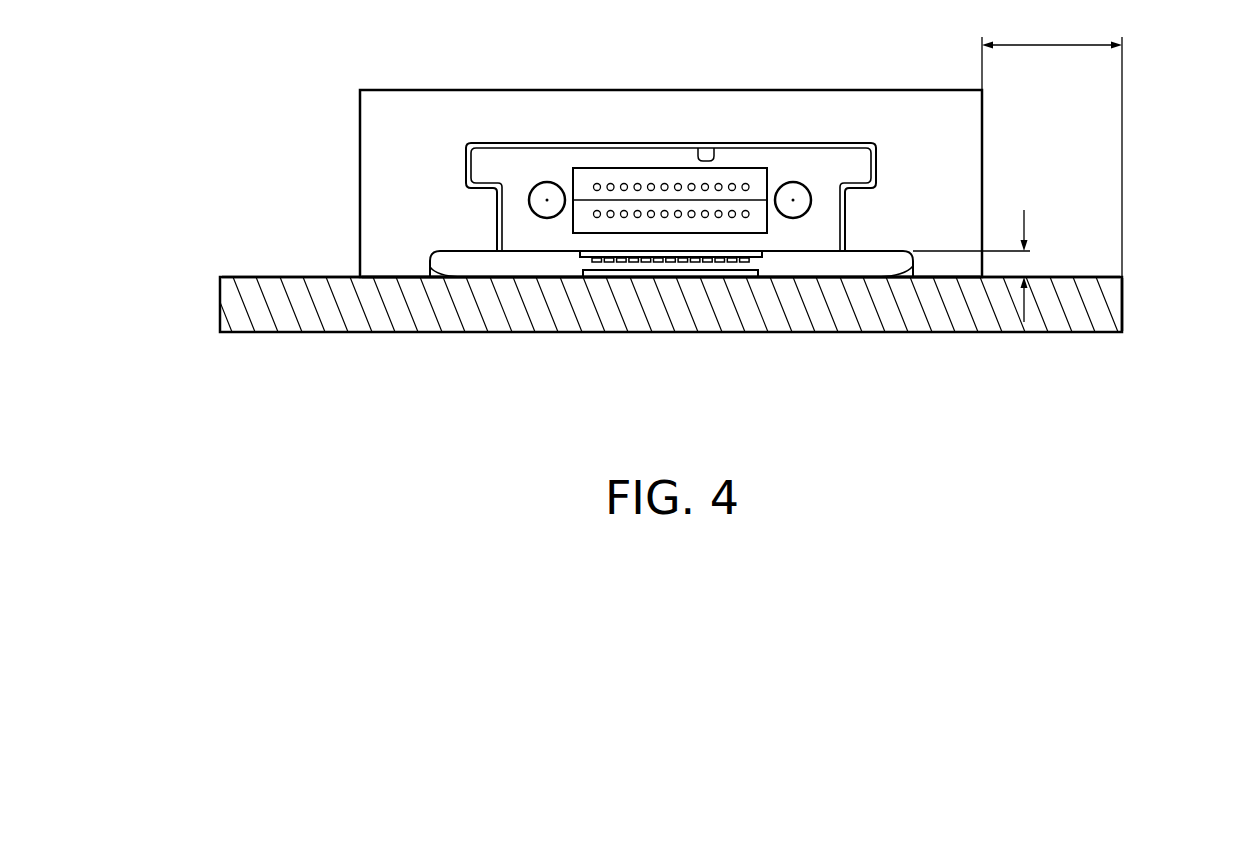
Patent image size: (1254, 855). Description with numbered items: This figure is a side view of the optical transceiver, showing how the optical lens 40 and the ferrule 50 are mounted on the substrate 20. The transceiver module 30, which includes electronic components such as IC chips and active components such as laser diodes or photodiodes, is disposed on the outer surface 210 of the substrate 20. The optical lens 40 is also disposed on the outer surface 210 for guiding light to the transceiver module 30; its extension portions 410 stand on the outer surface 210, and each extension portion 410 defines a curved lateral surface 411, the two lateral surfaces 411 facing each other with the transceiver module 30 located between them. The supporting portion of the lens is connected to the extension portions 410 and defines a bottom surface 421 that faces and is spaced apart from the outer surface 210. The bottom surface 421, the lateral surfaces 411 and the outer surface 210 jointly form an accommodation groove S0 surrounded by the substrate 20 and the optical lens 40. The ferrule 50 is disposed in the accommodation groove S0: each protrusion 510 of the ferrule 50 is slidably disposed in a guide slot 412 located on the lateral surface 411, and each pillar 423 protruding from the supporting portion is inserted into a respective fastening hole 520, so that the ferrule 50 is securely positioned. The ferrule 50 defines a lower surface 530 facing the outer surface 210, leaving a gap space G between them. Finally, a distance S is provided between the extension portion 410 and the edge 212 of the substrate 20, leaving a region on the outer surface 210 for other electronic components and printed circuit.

The substrate 20 is at (211, 301).
The outer surface 210 is at (275, 277).
The edge 212 is at (1122, 305).
The transceiver module 30 is at (678, 273).
The optical lens 40 is at (331, 183).
The extension portion 410 is at (391, 288).
The lateral surface 411 is at (458, 274).
The guide slot 412 is at (456, 162).
The bottom surface 421 is at (714, 143).
The pillar 423 is at (550, 198).
The ferrule 50 is at (675, 147).
The protrusion 510 is at (481, 165).
The fastening hole 520 is at (544, 168).
The lower surface 530 is at (792, 253).
The distance S is at (1052, 146).
The accommodation groove S0 is at (856, 209).
The gap space G is at (982, 266).